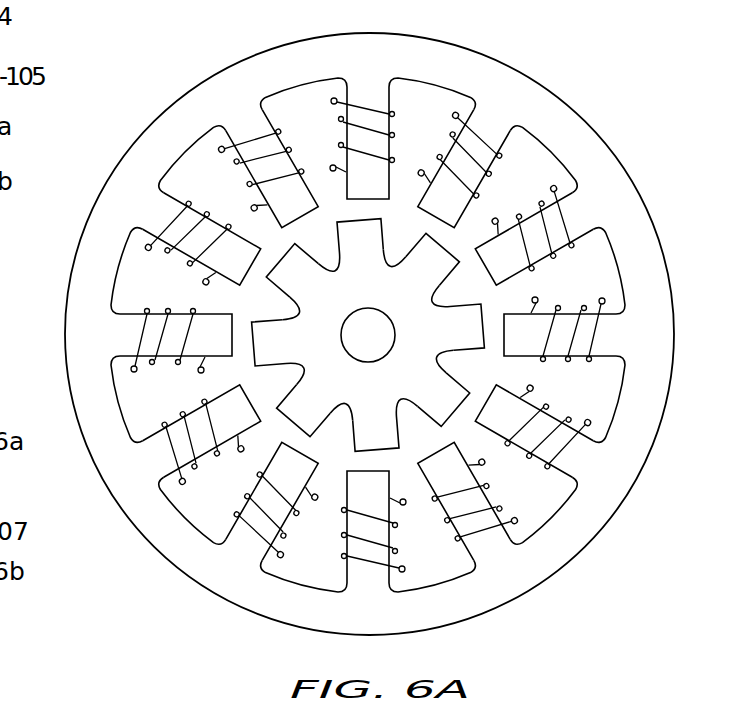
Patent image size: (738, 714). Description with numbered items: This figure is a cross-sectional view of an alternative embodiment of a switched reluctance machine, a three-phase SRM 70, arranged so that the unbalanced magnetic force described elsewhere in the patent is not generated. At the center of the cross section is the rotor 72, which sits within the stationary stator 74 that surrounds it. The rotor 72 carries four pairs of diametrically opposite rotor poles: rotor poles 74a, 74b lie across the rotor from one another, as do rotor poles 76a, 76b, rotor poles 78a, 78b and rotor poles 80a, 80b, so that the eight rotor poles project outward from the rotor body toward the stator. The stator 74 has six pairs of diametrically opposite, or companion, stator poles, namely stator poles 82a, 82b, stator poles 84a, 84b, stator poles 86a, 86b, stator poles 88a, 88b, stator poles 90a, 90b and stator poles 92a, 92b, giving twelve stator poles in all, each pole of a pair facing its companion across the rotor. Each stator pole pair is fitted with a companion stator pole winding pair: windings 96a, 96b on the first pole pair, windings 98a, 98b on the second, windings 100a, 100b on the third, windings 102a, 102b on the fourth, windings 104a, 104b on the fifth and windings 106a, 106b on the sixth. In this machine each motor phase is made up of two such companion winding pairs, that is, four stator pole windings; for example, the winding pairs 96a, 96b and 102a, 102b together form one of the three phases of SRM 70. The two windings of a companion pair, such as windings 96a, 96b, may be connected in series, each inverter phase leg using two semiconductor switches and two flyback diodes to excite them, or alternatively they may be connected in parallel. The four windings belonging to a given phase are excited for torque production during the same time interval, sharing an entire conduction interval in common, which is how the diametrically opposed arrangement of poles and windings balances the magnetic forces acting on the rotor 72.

The three-phase SRM 70 is at (542, 48).
The rotor 72 is at (368, 304).
The stator 74 is at (572, 145).
The rotor pole 74a is at (303, 356).
The rotor pole 74b is at (475, 341).
The rotor pole 76a is at (318, 294).
The rotor pole 76b is at (453, 404).
The rotor pole 78a is at (378, 259).
The rotor pole 78b is at (392, 437).
The rotor pole 80a is at (447, 286).
The rotor pole 80b is at (328, 417).
The stator pole 82a is at (620, 308).
The stator pole 82b is at (135, 327).
The stator pole 84a is at (175, 198).
The stator pole 84b is at (600, 418).
The stator pole 86a is at (276, 90).
The stator pole 86b is at (545, 522).
The stator pole 88a is at (410, 98).
The stator pole 88b is at (420, 580).
The stator pole 90a is at (522, 138).
The stator pole 90b is at (292, 573).
The stator pole 92a is at (603, 237).
The stator pole 92b is at (183, 503).
The stator pole winding 96a is at (170, 308).
The stator pole winding 96b is at (571, 363).
The stator pole winding 98a is at (216, 205).
The stator pole winding 98b is at (523, 460).
The stator pole winding 100a is at (293, 150).
The stator pole winding 100b is at (396, 540).
The stator pole winding 102a is at (388, 108).
The stator pole winding 102b is at (341, 524).
The stator pole winding 104a is at (491, 197).
The stator pole winding 104b is at (248, 492).
The stator pole winding 106a is at (547, 262).
The stator pole winding 106b is at (188, 408).